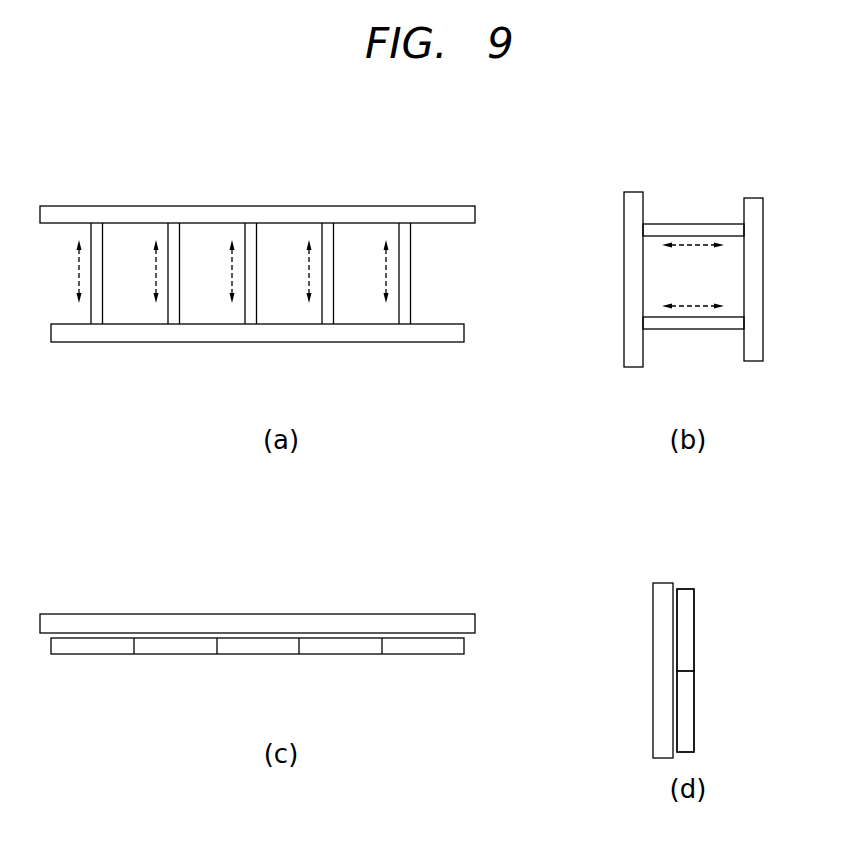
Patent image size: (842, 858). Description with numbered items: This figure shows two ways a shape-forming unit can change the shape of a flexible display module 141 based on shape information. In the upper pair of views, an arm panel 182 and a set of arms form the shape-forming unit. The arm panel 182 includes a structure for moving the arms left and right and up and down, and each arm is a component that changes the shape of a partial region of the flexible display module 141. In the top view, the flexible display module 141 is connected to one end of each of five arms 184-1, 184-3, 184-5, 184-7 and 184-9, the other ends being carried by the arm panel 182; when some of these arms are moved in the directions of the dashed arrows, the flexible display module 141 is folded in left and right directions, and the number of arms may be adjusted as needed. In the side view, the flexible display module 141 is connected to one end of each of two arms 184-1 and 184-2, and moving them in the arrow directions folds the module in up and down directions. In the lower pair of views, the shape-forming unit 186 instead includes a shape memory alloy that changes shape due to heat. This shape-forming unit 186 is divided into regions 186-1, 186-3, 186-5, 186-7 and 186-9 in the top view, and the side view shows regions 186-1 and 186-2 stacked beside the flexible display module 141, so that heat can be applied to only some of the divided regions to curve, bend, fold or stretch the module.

The flexible display module 141 is at (475, 209).
The arm panel 182 is at (464, 332).
The arm 184-1 is at (98, 303).
The arm 184-2 is at (694, 330).
The arm 184-3 is at (175, 303).
The arm 184-5 is at (252, 303).
The arm 184-7 is at (329, 303).
The arm 184-9 is at (406, 303).
The shape-forming unit 186 is at (464, 642).
The region 186-1 is at (92, 650).
The second vibration element 186-2 is at (694, 711).
The region 186-3 is at (175, 650).
The region 186-5 is at (258, 650).
The region 186-7 is at (341, 650).
The region 186-9 is at (424, 650).